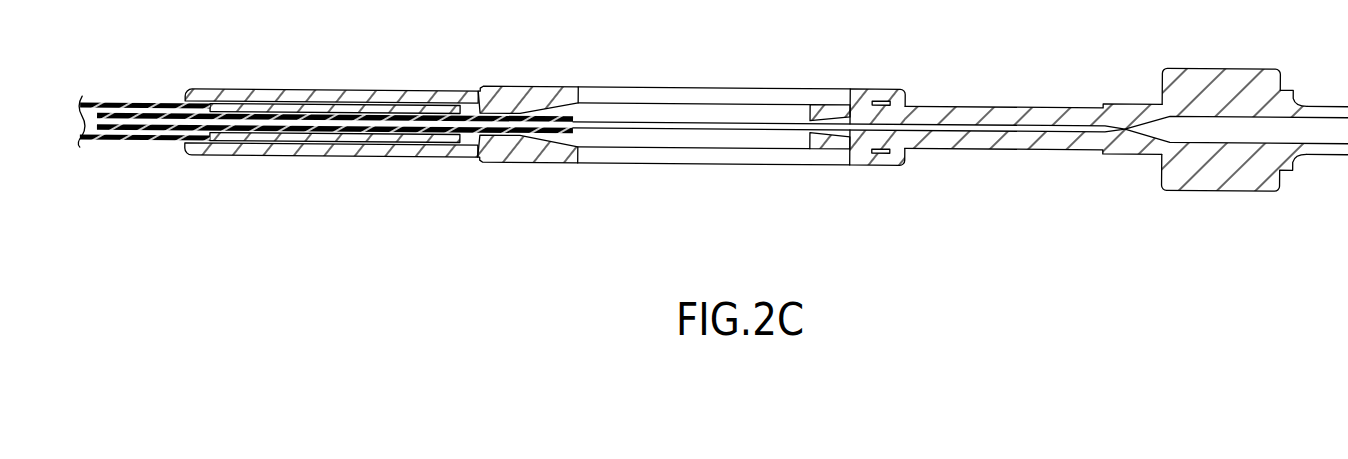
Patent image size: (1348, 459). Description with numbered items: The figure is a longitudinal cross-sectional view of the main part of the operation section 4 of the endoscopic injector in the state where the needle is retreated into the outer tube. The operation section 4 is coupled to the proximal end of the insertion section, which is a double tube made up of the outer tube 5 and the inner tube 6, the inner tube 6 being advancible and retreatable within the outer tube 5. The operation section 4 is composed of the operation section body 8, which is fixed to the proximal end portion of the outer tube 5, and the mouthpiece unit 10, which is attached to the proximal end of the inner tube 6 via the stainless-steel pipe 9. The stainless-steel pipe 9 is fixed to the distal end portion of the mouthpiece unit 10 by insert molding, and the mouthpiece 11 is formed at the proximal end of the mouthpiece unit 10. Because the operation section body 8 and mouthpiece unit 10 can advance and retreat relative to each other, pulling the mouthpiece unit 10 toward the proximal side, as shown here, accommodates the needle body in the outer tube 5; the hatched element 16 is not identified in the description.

The operation section 4 is at (917, 182).
The outer tube 5 is at (99, 142).
The inner tube 6 is at (137, 113).
The operation section body 8 is at (538, 99).
The stainless-steel pipe 9 is at (781, 131).
The mouthpiece unit 10 is at (1041, 100).
The mouthpiece 11 is at (1337, 105).
The hub body 16 is at (1186, 75).